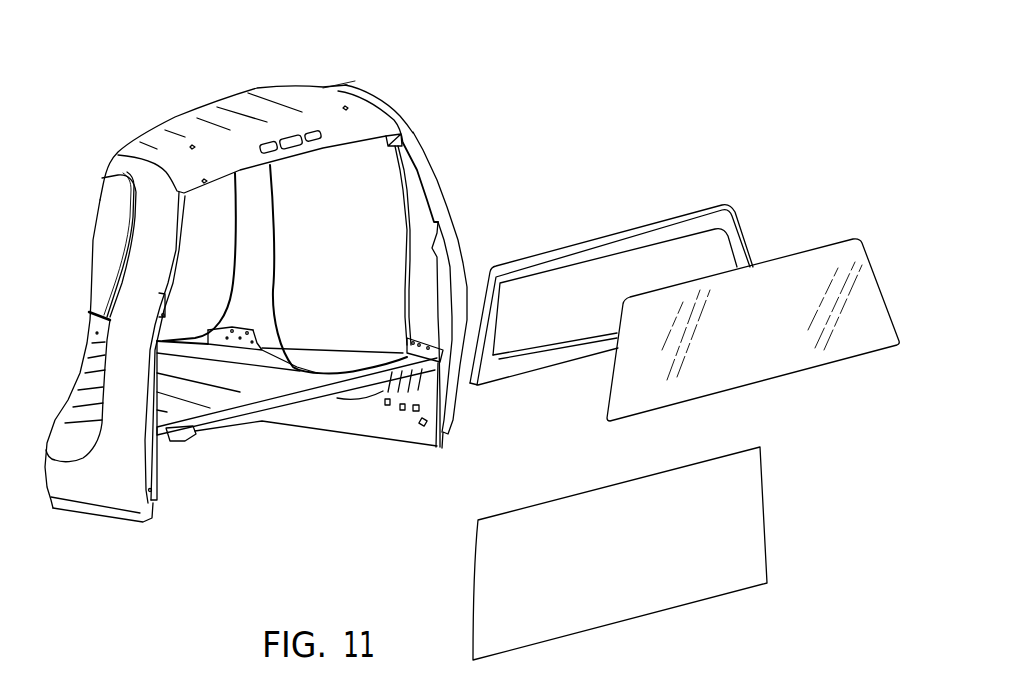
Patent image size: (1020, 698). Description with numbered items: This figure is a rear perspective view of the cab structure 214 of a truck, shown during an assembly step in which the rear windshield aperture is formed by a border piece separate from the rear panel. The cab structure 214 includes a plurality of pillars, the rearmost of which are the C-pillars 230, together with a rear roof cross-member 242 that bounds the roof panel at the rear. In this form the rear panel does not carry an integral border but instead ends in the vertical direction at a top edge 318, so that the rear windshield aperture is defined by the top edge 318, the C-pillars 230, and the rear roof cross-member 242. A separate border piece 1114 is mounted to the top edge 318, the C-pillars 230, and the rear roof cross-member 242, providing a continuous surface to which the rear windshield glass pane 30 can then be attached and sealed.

The cab structure 214 is at (163, 95).
The rear roof cross-member 242 is at (337, 130).
The C-pillars 230 is at (155, 238).
The border piece 1114 is at (735, 234).
The rear windshield glass pane 30 is at (763, 363).
The top edge 318 is at (663, 474).